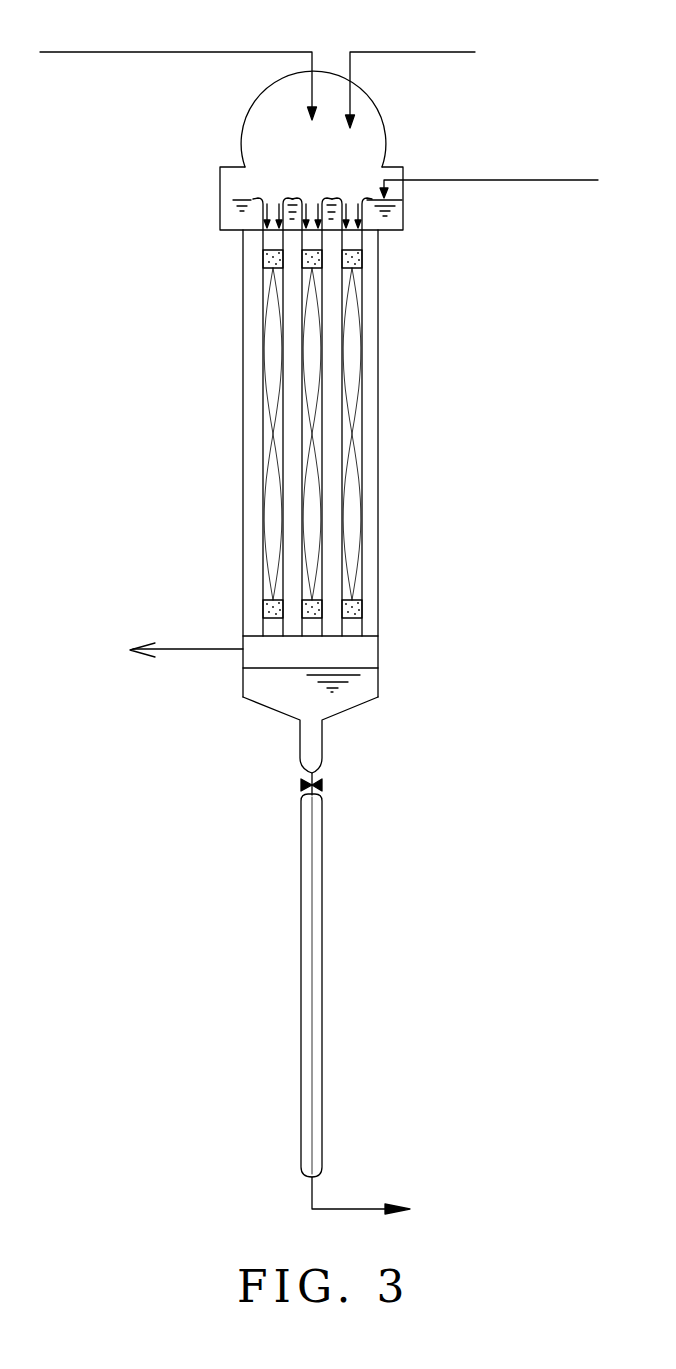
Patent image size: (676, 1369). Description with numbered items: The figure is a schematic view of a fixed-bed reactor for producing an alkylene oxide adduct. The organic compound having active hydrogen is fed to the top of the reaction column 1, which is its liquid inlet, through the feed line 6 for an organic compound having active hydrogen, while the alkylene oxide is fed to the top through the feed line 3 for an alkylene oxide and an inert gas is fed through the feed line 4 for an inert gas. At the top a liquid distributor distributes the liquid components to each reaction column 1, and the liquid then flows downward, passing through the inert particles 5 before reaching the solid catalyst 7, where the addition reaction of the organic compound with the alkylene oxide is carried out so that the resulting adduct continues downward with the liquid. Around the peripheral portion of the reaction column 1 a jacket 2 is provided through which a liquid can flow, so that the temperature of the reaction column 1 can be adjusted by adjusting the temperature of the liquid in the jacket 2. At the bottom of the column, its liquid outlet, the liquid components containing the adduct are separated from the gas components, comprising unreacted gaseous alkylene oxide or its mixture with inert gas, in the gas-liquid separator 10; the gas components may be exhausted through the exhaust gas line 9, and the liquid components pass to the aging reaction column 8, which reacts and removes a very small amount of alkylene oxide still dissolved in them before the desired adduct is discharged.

The reaction column 1 is at (363, 348).
The jacket 2 is at (380, 453).
The feed line for an alkylene oxide 3 is at (122, 52).
The feed line for an inert gas 4 is at (432, 50).
The inert particles 5 is at (362, 260).
The feed line for an organic compound having active hydrogen 6 is at (547, 178).
The solid catalyst 7 is at (265, 367).
The aging reaction column 8 is at (322, 1028).
The exhaust gas line 9 is at (180, 650).
The gas-liquid separator 10 is at (353, 697).